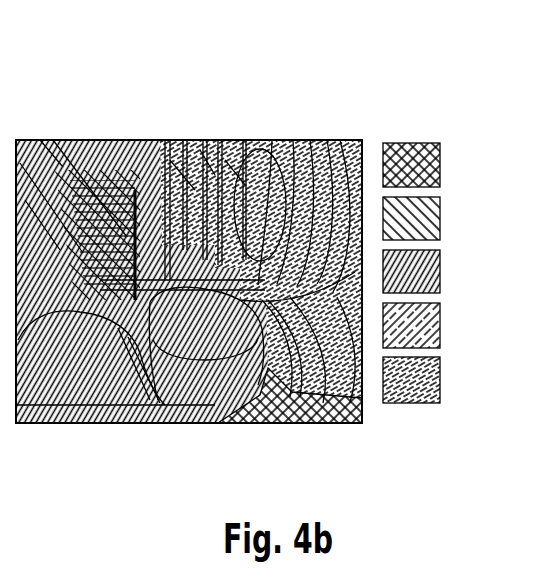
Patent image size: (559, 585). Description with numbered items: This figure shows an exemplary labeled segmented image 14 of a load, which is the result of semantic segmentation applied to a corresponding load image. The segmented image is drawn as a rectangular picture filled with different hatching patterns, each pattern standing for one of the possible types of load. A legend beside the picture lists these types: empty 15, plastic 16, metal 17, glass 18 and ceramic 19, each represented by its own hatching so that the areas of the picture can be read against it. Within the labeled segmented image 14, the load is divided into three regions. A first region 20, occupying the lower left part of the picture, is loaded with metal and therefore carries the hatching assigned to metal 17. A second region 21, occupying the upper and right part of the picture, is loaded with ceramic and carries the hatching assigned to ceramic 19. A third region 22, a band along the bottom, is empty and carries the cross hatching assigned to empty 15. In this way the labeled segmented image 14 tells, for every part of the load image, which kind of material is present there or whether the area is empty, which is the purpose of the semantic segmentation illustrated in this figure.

The labeled segmented image 14 is at (189, 249).
The empty 15 is at (420, 162).
The plastic 16 is at (420, 220).
The metal 17 is at (420, 275).
The glass 18 is at (420, 327).
The ceramic 19 is at (420, 382).
The first region 20 is at (72, 424).
The second region 21 is at (320, 138).
The third region 22 is at (270, 424).